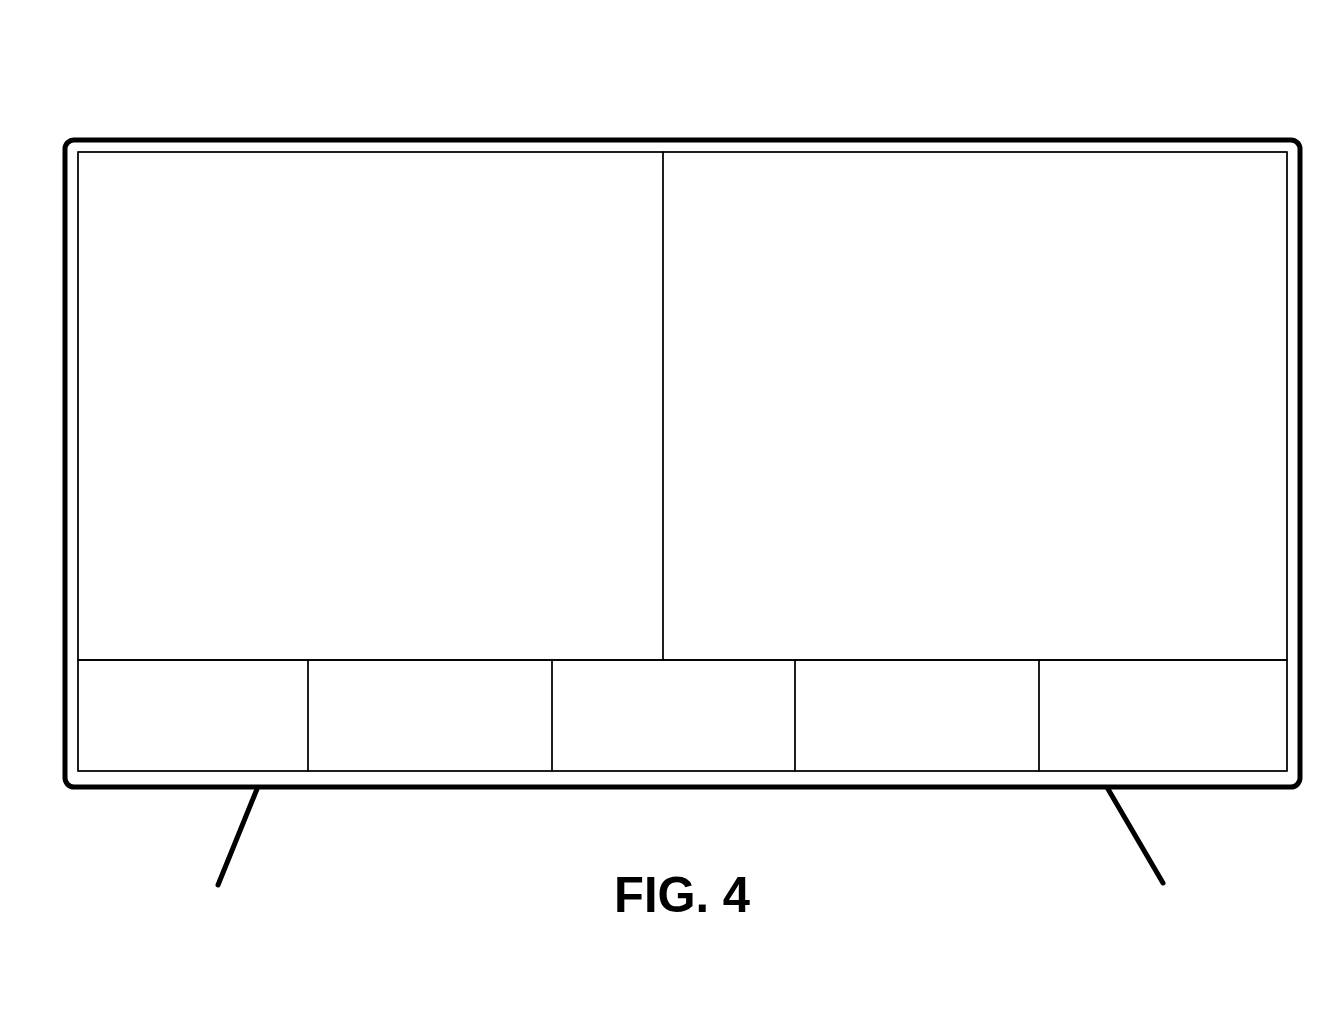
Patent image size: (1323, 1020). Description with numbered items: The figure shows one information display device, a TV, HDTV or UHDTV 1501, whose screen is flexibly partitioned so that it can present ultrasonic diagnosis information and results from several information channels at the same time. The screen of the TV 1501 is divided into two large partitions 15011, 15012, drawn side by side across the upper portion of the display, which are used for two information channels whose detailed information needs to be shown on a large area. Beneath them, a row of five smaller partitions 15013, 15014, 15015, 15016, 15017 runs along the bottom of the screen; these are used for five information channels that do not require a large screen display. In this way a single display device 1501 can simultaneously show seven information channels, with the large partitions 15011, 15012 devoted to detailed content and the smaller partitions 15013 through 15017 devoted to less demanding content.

The TV, HDTV or UHDTV 1501 is at (90, 73).
The large partition 15011 is at (352, 177).
The large partition 15012 is at (978, 177).
The smaller partition 15013 is at (157, 753).
The smaller partition 15014 is at (430, 753).
The smaller partition 15015 is at (682, 753).
The smaller partition 15016 is at (917, 753).
The smaller partition 15017 is at (1207, 753).